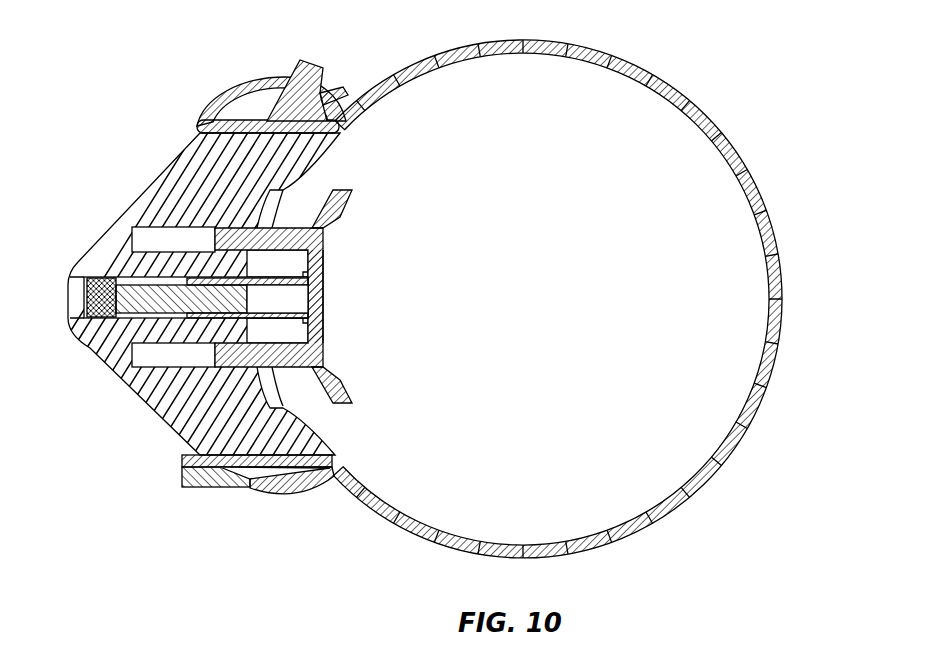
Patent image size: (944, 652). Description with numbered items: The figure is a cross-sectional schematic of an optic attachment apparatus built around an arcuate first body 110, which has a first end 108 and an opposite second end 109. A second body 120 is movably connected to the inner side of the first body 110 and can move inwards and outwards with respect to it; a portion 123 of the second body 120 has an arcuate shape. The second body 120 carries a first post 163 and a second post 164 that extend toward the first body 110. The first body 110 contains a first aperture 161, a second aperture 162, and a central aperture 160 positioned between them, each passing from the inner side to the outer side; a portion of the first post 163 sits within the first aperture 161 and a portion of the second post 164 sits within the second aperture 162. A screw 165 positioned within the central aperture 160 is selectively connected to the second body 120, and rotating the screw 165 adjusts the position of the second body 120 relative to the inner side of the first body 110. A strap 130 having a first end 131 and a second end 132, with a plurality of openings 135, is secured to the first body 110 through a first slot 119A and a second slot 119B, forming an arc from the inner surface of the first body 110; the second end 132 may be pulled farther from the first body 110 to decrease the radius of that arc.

The first end 108 is at (300, 60).
The second end 132 is at (343, 87).
The first slot 119A is at (265, 117).
The second post 164 is at (293, 227).
The second aperture 162 is at (160, 231).
The central aperture 160 is at (127, 280).
The portion 123 is at (346, 217).
The second body 120 is at (324, 262).
The screw 165 is at (296, 317).
The first aperture 161 is at (140, 353).
The first body 110 is at (170, 407).
The first post 163 is at (293, 368).
The first end 131 is at (183, 480).
The second slot 119B is at (222, 470).
The second end 109 is at (307, 493).
The strap 130 is at (781, 340).
The openings 135 is at (741, 427).